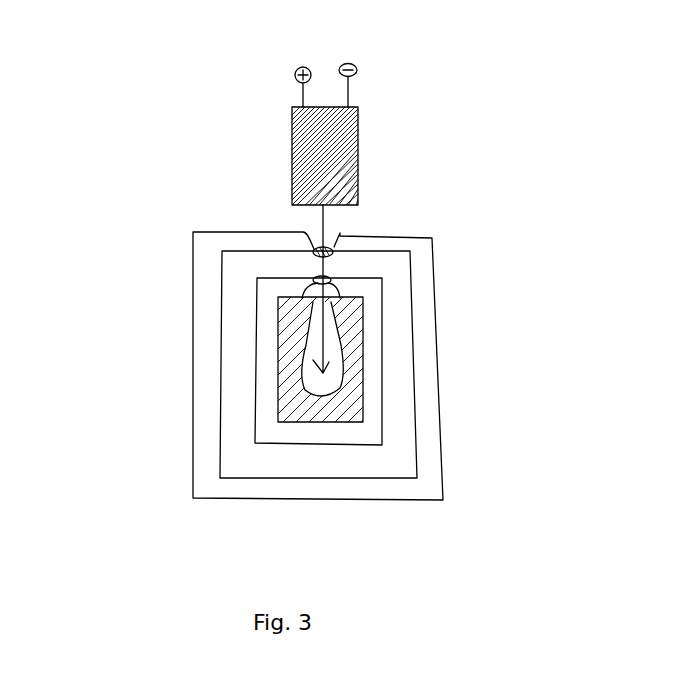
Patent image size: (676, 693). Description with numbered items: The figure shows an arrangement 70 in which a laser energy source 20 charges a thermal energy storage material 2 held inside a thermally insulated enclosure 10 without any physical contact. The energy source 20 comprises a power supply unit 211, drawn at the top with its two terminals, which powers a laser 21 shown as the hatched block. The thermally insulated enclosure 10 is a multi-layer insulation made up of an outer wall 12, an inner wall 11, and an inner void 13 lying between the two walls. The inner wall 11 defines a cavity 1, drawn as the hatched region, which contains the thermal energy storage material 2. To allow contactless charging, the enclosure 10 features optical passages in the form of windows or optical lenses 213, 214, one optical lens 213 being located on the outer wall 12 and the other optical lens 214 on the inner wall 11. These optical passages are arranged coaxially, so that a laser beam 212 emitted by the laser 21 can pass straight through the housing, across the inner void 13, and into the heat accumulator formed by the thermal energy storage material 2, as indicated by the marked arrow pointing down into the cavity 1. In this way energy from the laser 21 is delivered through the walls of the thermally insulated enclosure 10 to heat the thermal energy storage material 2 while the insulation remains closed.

The arrangement 70 is at (130, 137).
The energy source 20 is at (280, 150).
The laser 21 is at (337, 153).
The power supply unit 211 is at (298, 67).
The laser beam 212 is at (327, 228).
The optical lens 213 is at (323, 250).
The optical lens 214 is at (318, 280).
The thermally insulated enclosure 10 is at (183, 283).
The outer wall 12 is at (420, 347).
The inner void 13 is at (242, 373).
The inner wall 11 is at (373, 375).
The cavity 1 is at (277, 403).
The thermal energy storage material 2 is at (303, 405).